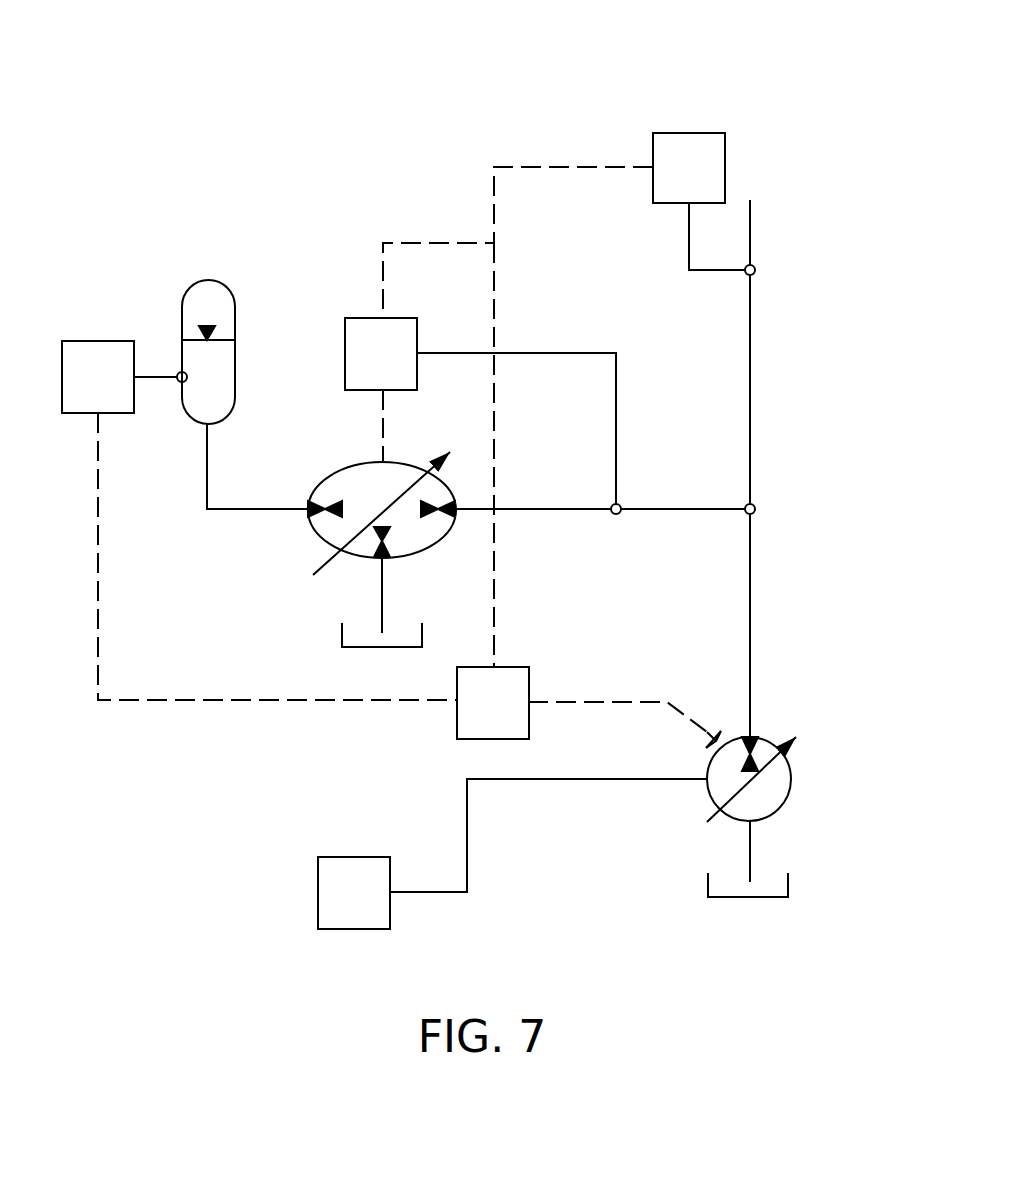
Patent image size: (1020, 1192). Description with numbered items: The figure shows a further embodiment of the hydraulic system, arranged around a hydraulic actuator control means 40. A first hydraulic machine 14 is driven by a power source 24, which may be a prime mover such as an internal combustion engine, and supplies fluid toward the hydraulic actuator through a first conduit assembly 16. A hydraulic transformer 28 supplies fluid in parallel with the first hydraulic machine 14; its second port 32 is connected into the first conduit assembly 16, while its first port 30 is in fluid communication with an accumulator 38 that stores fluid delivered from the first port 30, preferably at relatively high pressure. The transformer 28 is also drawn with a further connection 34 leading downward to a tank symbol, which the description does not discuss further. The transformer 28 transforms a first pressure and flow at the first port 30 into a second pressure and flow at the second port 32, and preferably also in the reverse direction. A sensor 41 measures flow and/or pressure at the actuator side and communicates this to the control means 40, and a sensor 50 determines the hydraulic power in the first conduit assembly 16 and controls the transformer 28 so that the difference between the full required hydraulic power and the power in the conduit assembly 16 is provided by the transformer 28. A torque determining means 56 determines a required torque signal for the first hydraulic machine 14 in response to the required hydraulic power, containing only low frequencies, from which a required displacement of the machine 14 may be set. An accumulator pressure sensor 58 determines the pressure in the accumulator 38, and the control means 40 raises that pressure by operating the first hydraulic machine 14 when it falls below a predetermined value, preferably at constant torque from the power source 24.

The hydraulic actuator control means 40 is at (360, 90).
The sensor 41 is at (704, 204).
The first conduit assembly 16 is at (668, 551).
The sensor 50 is at (480, 411).
The accumulator pressure sensor 58 is at (124, 377).
The accumulator 38 is at (226, 266).
The hydraulic transformer 28 is at (340, 450).
The first port 30 is at (292, 524).
The second port 32 is at (474, 499).
The drain line 34 is at (392, 569).
The torque determining means 56 is at (493, 703).
The first hydraulic machine 14 is at (786, 816).
The power source 24 is at (354, 893).